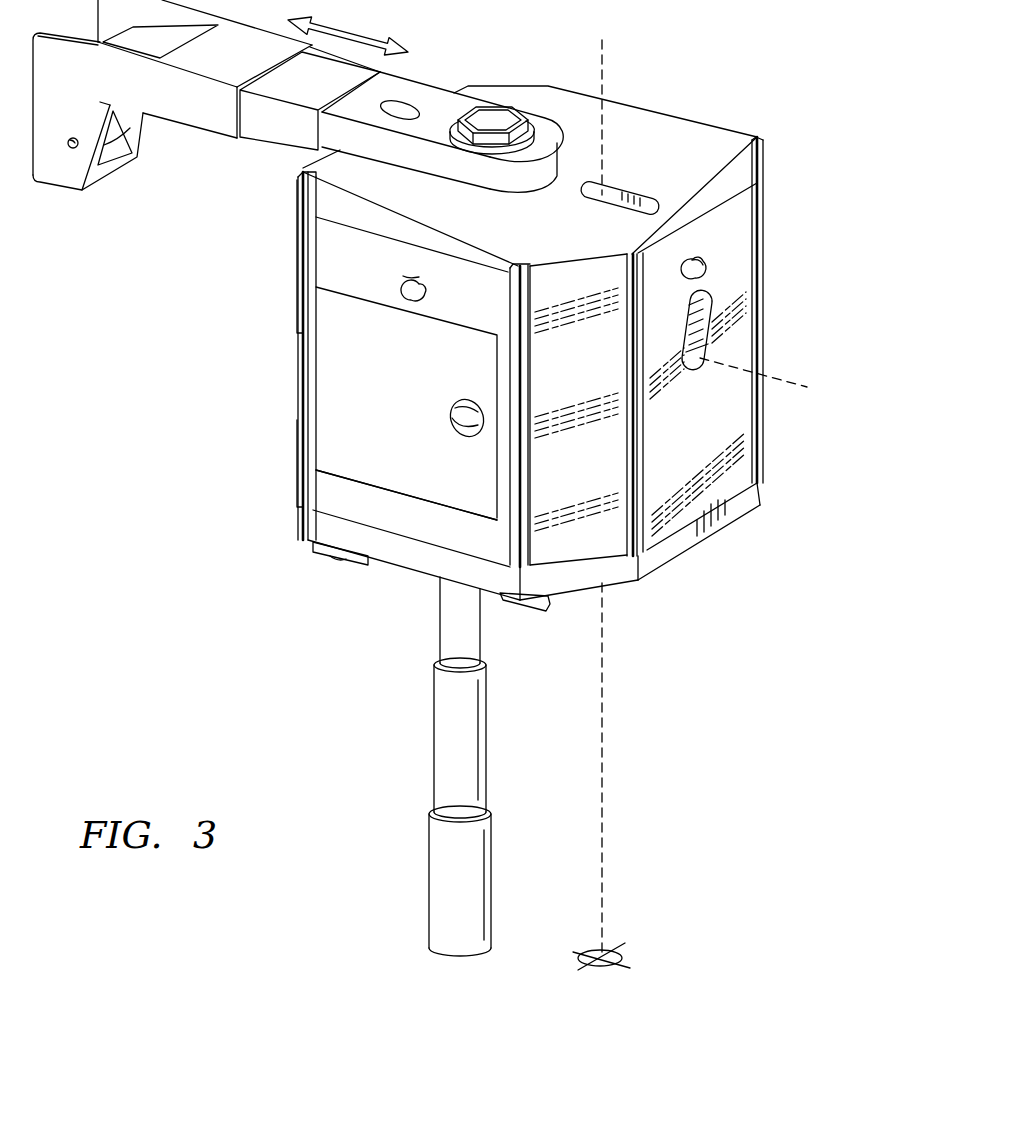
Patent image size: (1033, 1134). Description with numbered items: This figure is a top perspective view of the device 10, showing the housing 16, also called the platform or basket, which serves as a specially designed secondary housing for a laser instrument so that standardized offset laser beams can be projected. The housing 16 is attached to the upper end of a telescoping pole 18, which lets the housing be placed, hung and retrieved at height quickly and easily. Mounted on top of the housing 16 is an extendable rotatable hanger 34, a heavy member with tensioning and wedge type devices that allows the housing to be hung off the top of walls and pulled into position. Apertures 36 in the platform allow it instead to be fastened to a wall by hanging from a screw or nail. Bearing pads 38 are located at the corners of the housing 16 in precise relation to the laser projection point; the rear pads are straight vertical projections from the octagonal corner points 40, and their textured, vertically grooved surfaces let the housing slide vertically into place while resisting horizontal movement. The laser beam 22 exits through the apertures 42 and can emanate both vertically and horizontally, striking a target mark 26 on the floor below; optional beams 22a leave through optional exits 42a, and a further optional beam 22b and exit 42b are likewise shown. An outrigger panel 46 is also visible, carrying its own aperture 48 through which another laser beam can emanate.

The device 10 is at (247, 365).
The housing 16 is at (407, 523).
The telescoping pole 18 is at (447, 717).
The laser beam 22 is at (603, 783).
The optional laser beam 22a is at (602, 42).
The second axis 22b is at (788, 382).
The target mark 26 is at (625, 955).
The extendable rotatable hanger 34 is at (57, 171).
The apertures 36 is at (403, 278).
The bearing pads 38 is at (297, 228).
The octagonal corner points 40 is at (633, 253).
The apertures for the laser beams 42 is at (494, 107).
The optional beam exits 42a is at (647, 202).
The side slot 42b is at (690, 372).
The outrigger panel 46 is at (352, 472).
The aperture 48 is at (452, 412).